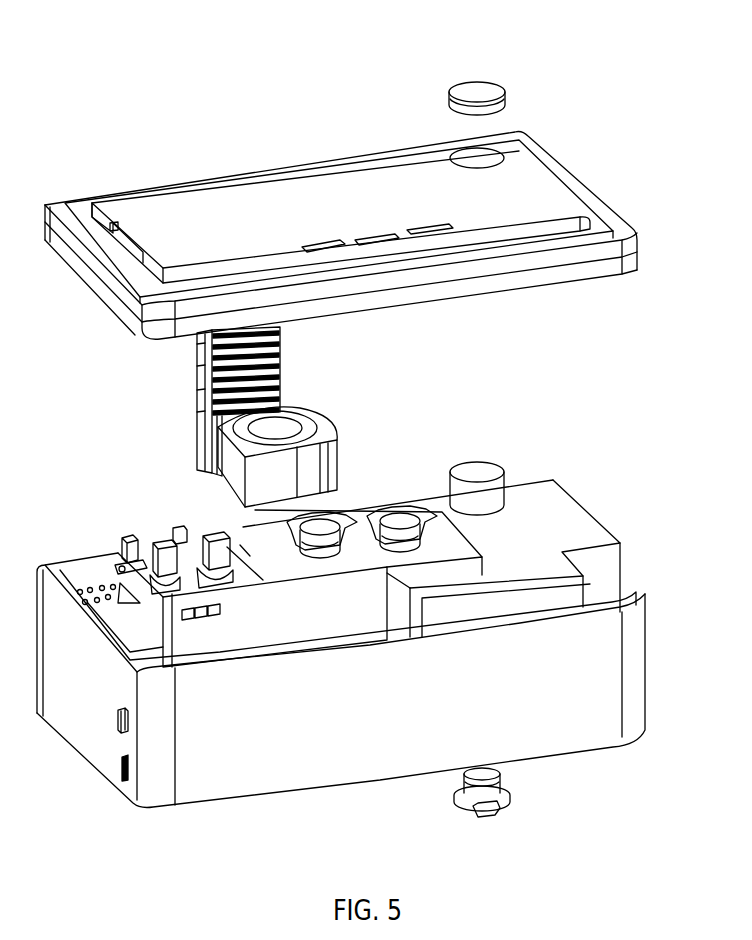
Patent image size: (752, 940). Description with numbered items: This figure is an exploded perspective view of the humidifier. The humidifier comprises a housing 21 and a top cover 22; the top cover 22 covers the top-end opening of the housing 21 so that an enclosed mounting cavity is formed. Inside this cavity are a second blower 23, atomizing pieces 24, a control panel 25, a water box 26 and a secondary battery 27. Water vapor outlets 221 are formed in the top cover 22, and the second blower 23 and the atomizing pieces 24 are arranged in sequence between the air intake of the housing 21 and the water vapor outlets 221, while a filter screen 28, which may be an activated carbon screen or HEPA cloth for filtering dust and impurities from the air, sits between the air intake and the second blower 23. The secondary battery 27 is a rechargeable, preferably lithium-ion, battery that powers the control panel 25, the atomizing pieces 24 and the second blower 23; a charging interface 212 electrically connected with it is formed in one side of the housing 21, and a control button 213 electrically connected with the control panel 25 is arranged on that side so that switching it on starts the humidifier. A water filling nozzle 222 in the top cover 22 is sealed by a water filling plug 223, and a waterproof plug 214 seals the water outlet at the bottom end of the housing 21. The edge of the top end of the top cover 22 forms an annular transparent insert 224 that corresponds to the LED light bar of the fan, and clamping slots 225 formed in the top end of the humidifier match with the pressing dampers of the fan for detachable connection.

The housing 21 is at (374, 645).
The top cover 22 is at (372, 213).
The second blower 23 is at (337, 438).
The atomizing pieces 24 is at (397, 520).
The control panel 25 is at (122, 542).
The water box 26 is at (583, 505).
The secondary battery 27 is at (302, 643).
The filter screen 28 is at (198, 388).
The charging interface 212 is at (124, 779).
The control button 213 is at (117, 727).
The waterproof plug 214 is at (495, 813).
The water vapor outlets 221 is at (363, 240).
The water filling nozzle 222 is at (462, 155).
The water filling plug 223 is at (487, 88).
The transparent insert 224 is at (597, 260).
The clamping slots 225 is at (130, 238).